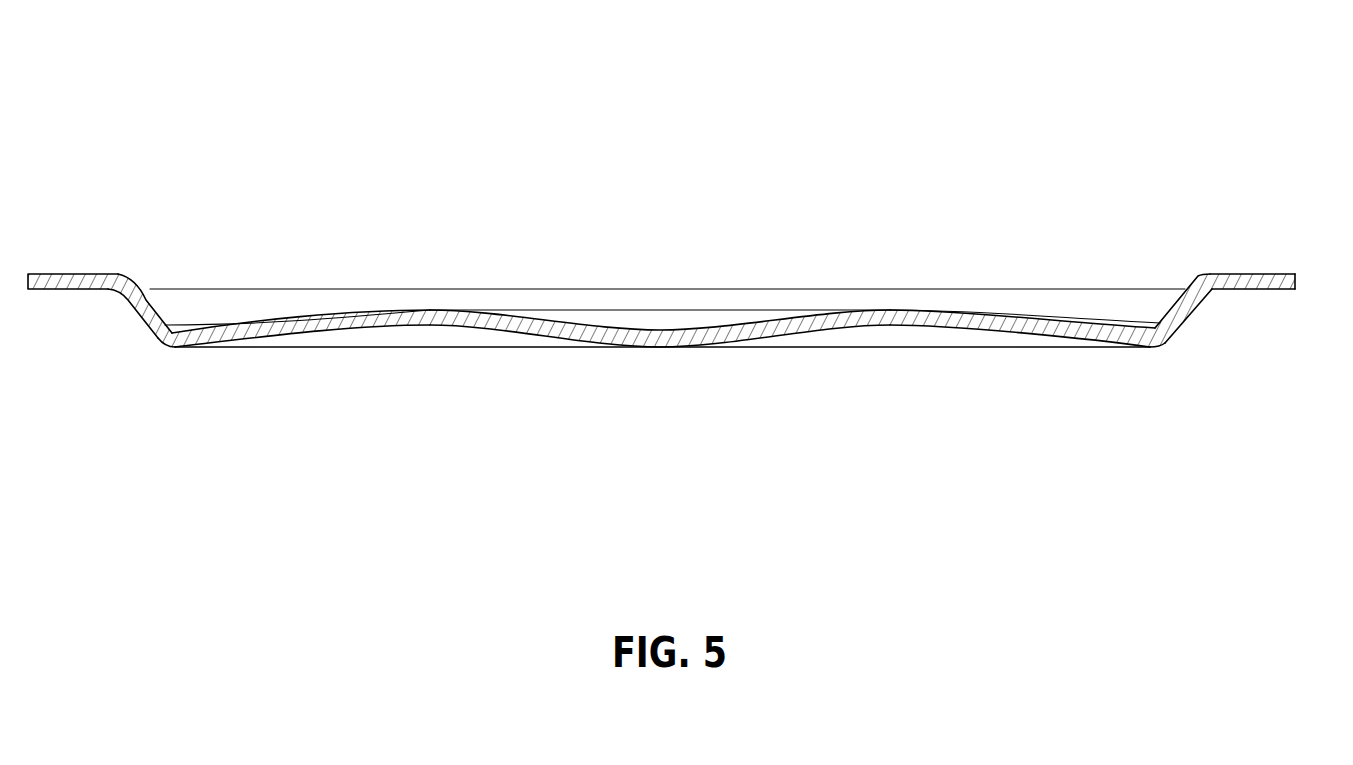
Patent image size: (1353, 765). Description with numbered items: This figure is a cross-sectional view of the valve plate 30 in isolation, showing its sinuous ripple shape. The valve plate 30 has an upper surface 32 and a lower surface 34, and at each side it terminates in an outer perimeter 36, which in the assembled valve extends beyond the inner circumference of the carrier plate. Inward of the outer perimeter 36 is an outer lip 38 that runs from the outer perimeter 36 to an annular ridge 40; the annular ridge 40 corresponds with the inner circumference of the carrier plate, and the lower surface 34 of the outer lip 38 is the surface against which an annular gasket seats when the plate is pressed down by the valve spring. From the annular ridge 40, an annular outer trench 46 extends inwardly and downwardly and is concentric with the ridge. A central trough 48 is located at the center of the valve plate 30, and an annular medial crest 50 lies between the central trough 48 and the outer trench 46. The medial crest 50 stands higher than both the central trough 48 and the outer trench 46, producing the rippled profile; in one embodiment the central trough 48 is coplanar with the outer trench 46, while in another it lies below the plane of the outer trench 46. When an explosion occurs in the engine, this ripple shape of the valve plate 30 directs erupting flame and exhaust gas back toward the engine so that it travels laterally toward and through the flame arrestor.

The valve plate 30 is at (514, 98).
The upper surface 32 is at (302, 298).
The lower surface 34 is at (840, 332).
The outer perimeter 36 is at (1298, 285).
The outer lip 38 is at (1255, 277).
The annular ridge 40 is at (1200, 277).
The annular outer trench 46 is at (175, 342).
The central trough 48 is at (658, 317).
The medial crest 50 is at (423, 320).